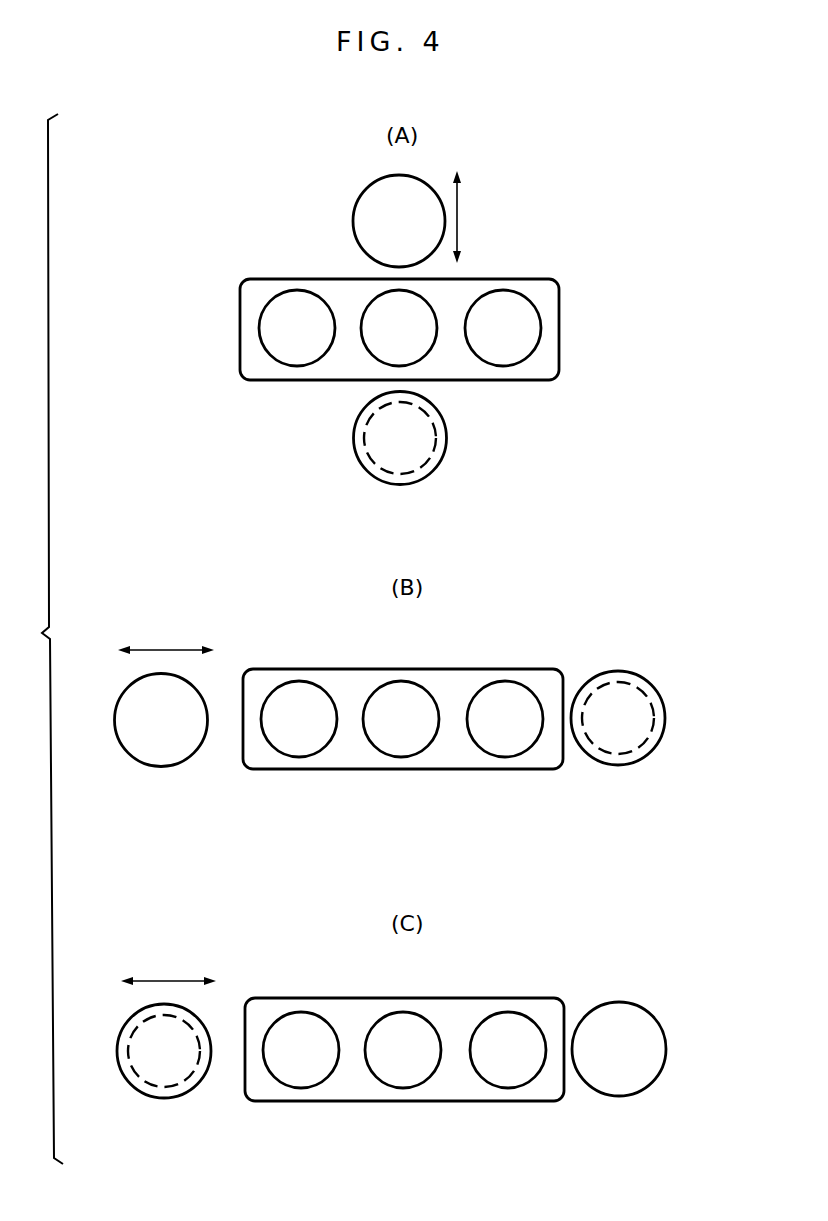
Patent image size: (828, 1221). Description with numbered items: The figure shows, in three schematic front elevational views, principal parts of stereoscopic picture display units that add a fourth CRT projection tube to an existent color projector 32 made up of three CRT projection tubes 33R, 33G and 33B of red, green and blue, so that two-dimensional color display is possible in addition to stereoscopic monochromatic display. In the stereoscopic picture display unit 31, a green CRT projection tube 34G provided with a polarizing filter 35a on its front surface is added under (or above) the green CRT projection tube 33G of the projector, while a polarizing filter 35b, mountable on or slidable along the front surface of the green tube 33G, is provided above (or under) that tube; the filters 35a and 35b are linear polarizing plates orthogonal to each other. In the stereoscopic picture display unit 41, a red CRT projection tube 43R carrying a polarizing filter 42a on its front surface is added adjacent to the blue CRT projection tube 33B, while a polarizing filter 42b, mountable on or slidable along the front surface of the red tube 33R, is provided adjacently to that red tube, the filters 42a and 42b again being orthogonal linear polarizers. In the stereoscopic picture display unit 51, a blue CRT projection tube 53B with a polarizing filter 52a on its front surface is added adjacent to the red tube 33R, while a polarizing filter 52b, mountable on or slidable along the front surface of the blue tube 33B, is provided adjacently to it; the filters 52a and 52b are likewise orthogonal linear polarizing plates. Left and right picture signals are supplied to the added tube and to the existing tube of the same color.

The stereoscopic picture display unit 31 is at (263, 229).
The existent color projector 32 is at (511, 274).
The red CRT projection tube 33R is at (286, 362).
The green CRT projection tube 33G is at (423, 353).
The blue CRT projection tube 33B is at (519, 361).
The green CRT projection tube 34G is at (367, 458).
The polarizing filter 35a is at (433, 462).
The polarizing filter 35b is at (352, 207).
The stereoscopic picture display unit 41 is at (272, 638).
The polarizing filter 42a is at (608, 760).
The polarizing filter 42b is at (157, 753).
The red CRT projection tube 43R is at (642, 742).
The stereoscopic picture display unit 51 is at (270, 971).
The polarizing filter 52a is at (177, 1093).
The polarizing filter 52b is at (613, 1082).
The blue CRT projection tube 53B is at (137, 1087).